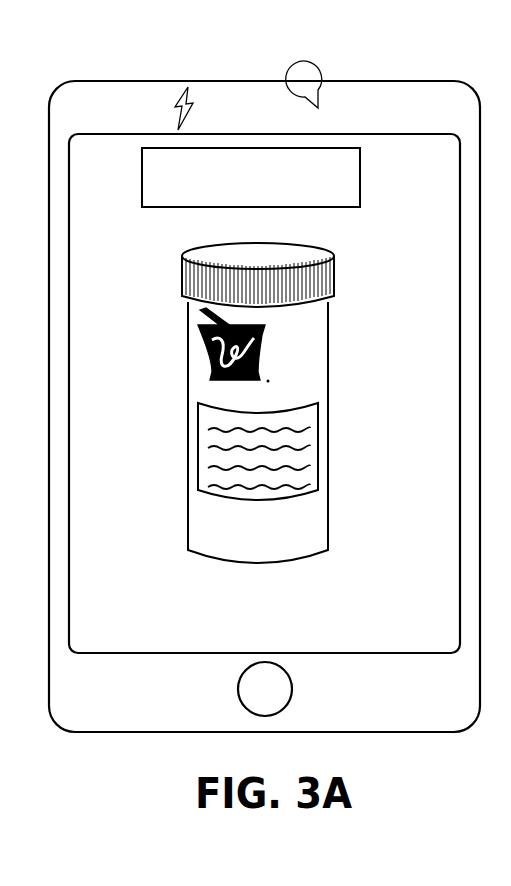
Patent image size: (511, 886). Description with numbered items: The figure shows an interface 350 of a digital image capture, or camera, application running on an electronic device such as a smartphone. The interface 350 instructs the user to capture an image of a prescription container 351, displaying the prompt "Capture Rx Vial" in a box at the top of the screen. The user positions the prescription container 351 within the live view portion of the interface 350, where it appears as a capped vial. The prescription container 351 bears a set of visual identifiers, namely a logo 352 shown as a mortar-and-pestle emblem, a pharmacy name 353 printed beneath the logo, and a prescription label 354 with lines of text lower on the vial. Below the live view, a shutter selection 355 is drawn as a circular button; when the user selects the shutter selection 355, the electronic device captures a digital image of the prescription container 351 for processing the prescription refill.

The interface 350 is at (389, 172).
The prescription container 351 is at (190, 343).
The logo 352 is at (255, 348).
The pharmacy name 353 is at (275, 393).
The prescription label 354 is at (318, 441).
The shutter selection 355 is at (238, 689).